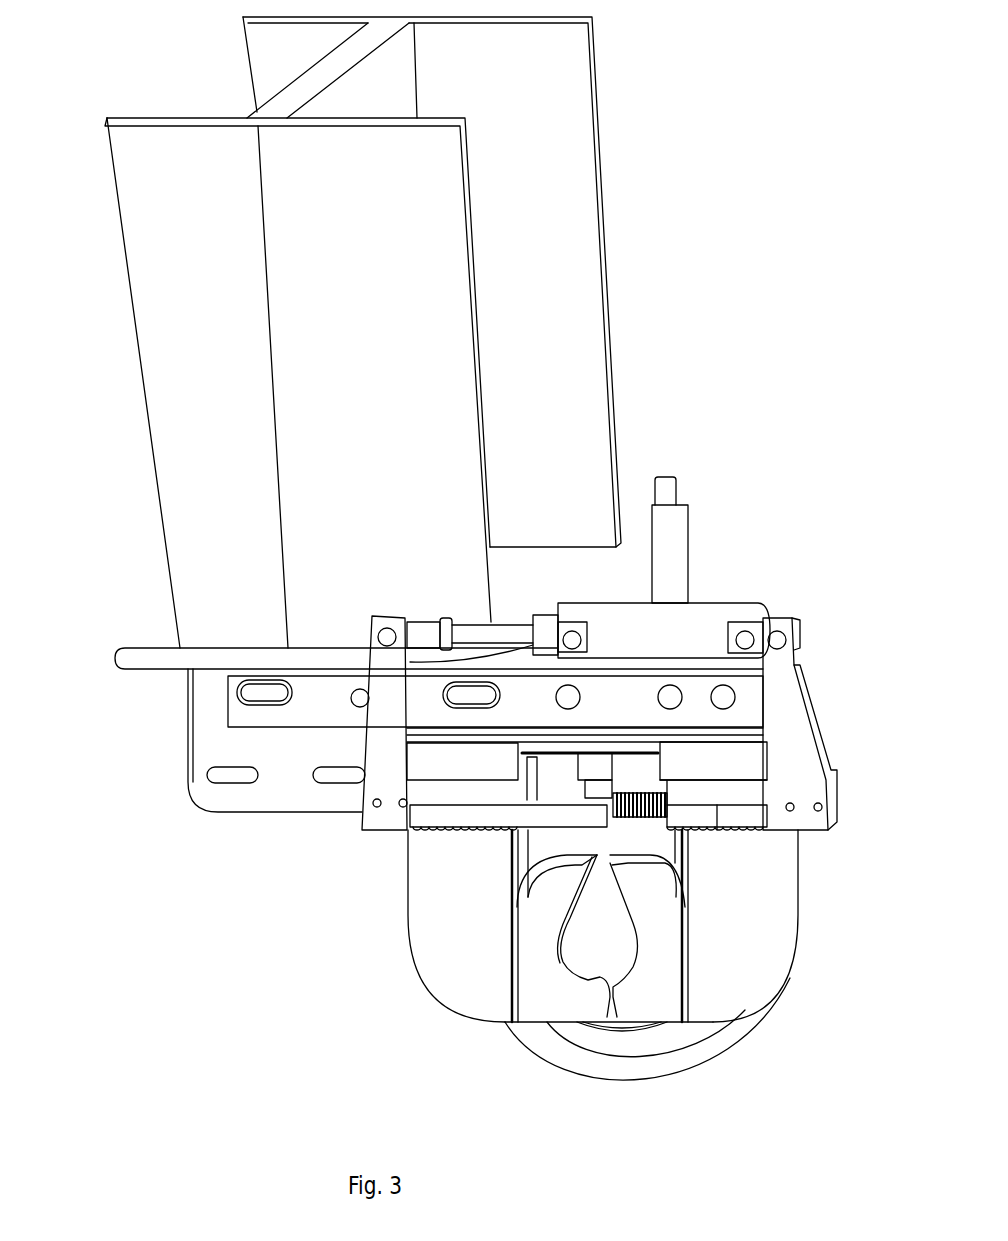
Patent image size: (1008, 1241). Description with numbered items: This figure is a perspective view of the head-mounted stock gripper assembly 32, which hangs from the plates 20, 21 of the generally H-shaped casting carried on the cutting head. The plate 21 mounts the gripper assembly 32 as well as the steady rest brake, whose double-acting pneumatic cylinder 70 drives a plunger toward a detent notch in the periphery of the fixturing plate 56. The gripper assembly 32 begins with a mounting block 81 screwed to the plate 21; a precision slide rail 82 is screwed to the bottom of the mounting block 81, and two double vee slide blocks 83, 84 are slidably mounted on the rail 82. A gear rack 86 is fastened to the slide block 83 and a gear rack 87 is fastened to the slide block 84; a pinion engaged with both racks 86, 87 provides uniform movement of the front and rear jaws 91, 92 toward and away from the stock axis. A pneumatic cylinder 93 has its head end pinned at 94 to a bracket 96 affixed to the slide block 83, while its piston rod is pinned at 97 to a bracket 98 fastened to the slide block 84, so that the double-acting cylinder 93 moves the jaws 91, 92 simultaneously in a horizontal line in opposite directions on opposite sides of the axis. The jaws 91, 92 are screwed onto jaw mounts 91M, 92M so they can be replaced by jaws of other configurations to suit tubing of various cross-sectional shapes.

The plate 20 is at (143, 636).
The plate 21 is at (206, 748).
The head mounted stock gripper assembly 32 is at (548, 987).
The fixturing plate 56 is at (690, 1060).
The double-acting pneumatic cylinder 70 is at (677, 522).
The mounting block 81 is at (313, 710).
The precision slide rail 82 is at (620, 750).
The double vee slide block 83 is at (698, 770).
The double vee slide block 84 is at (440, 770).
The gear rack 86 is at (645, 808).
The gear rack 87 is at (550, 818).
The front jaw 91 is at (665, 993).
The jaw mount 91M is at (757, 967).
The rear jaw 92 is at (553, 1010).
The jaw mount 92M is at (458, 978).
The pneumatic cylinder 93 is at (703, 618).
The pin 94 is at (783, 647).
The bracket 96 is at (800, 746).
The pin 97 is at (383, 633).
The bracket 98 is at (378, 767).